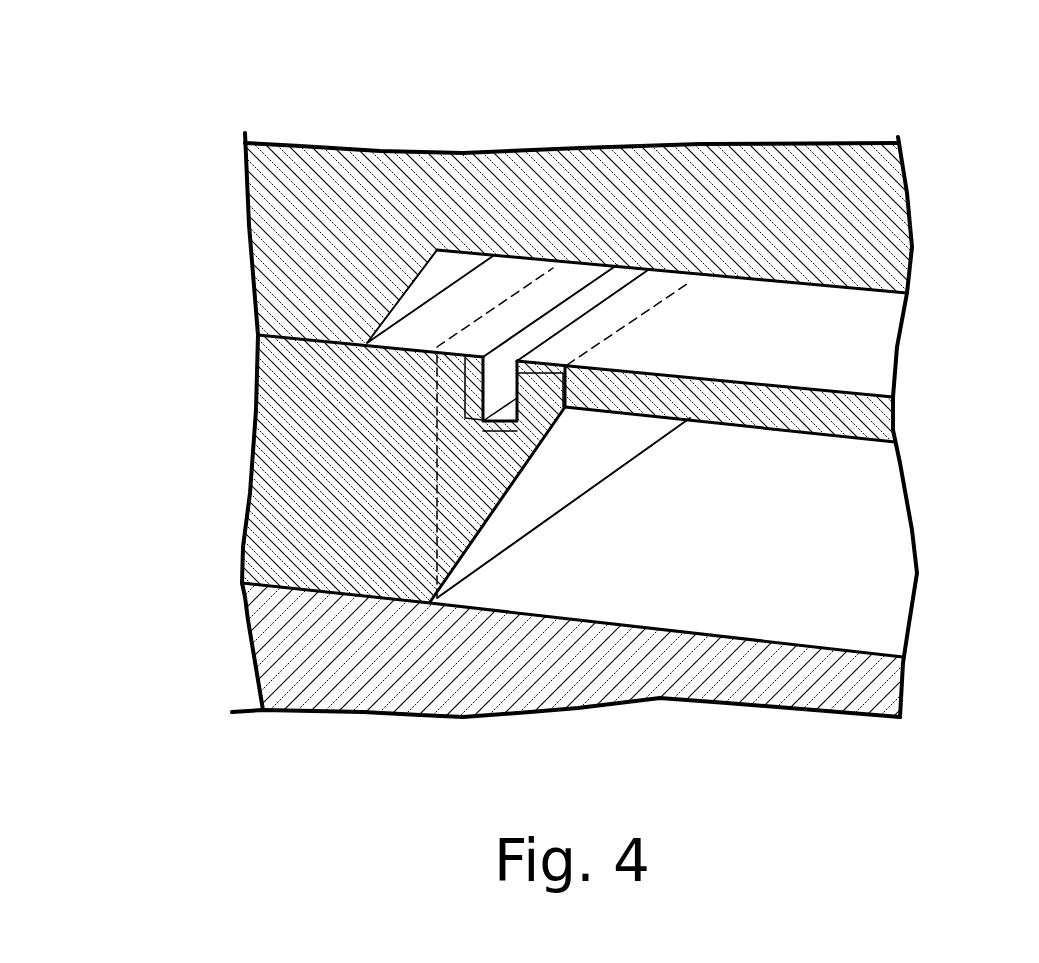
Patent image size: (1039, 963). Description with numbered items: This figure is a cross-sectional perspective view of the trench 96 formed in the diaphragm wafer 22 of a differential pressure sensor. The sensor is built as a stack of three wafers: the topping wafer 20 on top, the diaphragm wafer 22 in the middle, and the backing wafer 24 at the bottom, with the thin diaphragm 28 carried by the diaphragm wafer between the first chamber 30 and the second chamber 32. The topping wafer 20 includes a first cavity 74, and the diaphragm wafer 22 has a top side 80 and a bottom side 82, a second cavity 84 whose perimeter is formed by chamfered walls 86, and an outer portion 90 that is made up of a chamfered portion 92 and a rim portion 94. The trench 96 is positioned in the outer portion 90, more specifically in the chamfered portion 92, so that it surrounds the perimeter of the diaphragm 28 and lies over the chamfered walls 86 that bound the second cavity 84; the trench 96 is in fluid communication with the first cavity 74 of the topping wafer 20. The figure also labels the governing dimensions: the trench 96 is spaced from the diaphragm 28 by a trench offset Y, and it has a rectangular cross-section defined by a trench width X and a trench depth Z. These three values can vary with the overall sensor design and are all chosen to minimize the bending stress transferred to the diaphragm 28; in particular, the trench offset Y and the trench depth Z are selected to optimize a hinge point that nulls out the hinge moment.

The topping wafer 20 is at (862, 227).
The diaphragm wafer 22 is at (863, 350).
The backing wafer 24 is at (873, 680).
The diaphragm 28 is at (877, 417).
The first chamber 30 is at (863, 320).
The second chamber 32 is at (865, 563).
The first cavity 74 is at (762, 312).
The top side 80 is at (302, 326).
The bottom side 82 is at (300, 604).
The second cavity 84 is at (843, 515).
The chamfered walls 86 is at (570, 462).
The outer portion 90 is at (293, 493).
The chamfered portion 92 is at (453, 487).
The rim portion 94 is at (282, 373).
The trench 96 is at (614, 281).
The trench width X is at (502, 431).
The trench offset Y is at (545, 372).
The trench depth Z is at (463, 388).